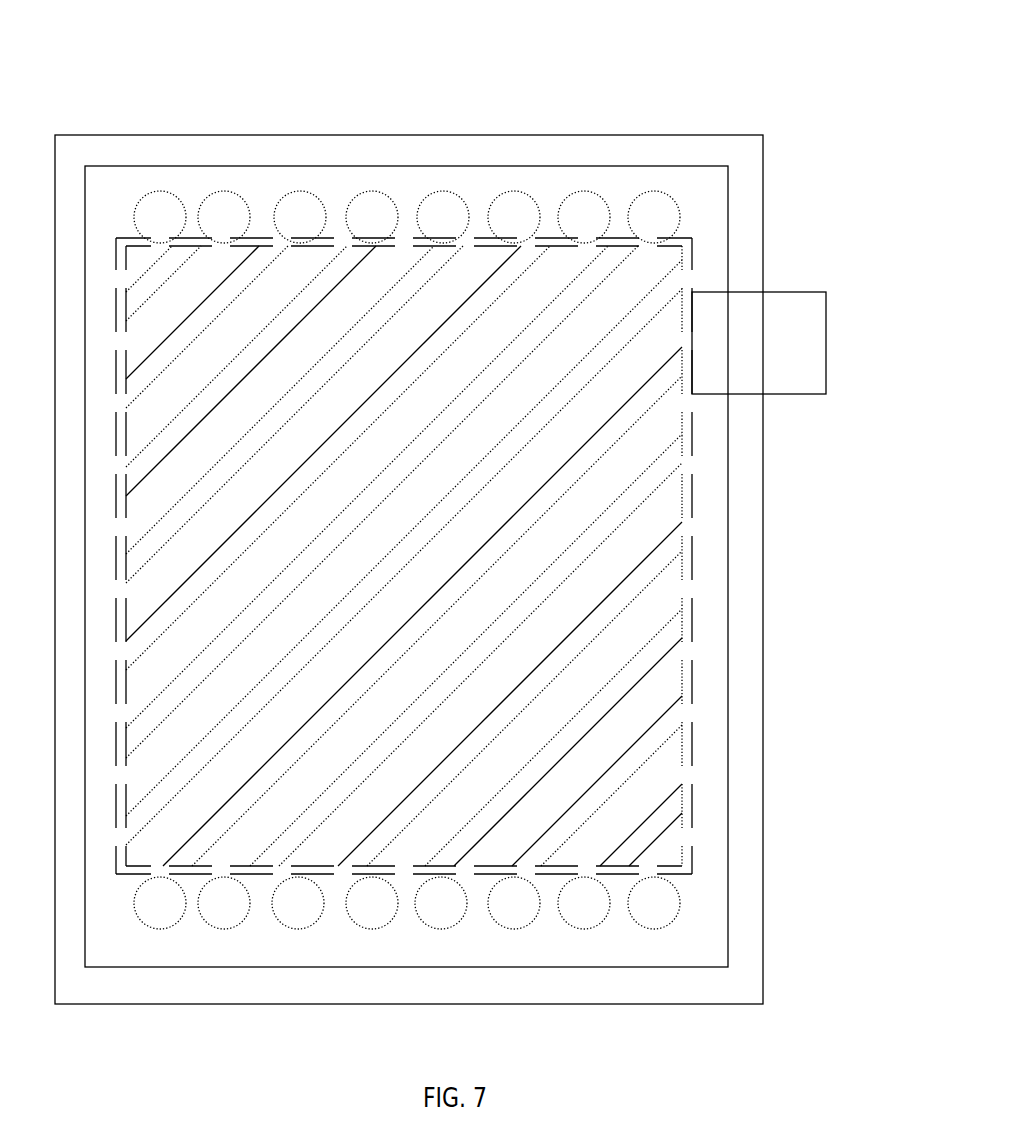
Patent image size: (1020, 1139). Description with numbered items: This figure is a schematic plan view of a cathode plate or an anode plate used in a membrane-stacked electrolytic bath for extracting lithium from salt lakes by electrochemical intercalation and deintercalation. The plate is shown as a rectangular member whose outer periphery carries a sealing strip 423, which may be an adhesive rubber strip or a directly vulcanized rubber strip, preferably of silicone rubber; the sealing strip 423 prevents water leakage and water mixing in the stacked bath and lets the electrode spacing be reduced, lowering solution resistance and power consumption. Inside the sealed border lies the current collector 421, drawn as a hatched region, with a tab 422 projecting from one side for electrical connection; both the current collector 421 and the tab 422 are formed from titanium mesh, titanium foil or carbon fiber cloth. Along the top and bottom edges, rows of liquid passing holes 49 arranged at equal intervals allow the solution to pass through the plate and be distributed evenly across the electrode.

The liquid passing holes 49 is at (512, 210).
The current collector 421 is at (685, 448).
The tab 422 is at (788, 307).
The sealing strip 423 is at (750, 186).